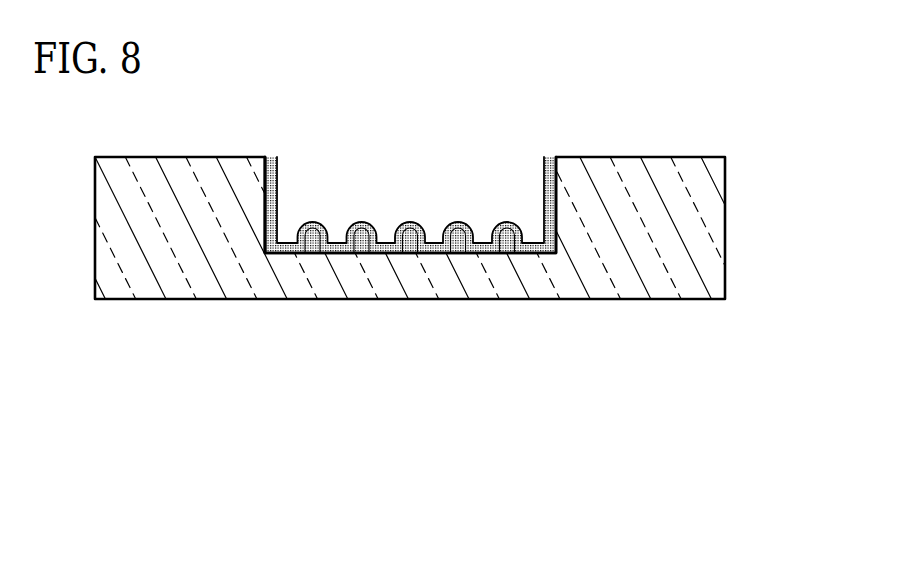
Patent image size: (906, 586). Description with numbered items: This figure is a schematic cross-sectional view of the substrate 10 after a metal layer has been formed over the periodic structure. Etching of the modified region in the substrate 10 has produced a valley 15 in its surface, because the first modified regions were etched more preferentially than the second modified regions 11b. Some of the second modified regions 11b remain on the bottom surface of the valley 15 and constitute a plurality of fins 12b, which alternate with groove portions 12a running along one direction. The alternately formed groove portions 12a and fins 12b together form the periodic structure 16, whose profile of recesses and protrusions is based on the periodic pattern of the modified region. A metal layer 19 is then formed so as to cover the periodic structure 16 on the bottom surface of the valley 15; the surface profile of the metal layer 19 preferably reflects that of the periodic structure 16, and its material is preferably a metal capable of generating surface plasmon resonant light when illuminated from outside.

The substrate 10 is at (704, 199).
The second modified region 11b is at (257, 187).
The valley 15 is at (426, 157).
The metal layer 19 is at (362, 221).
The groove portion 12a is at (368, 300).
The fin 12b is at (362, 238).
The periodic structure 16 is at (402, 315).